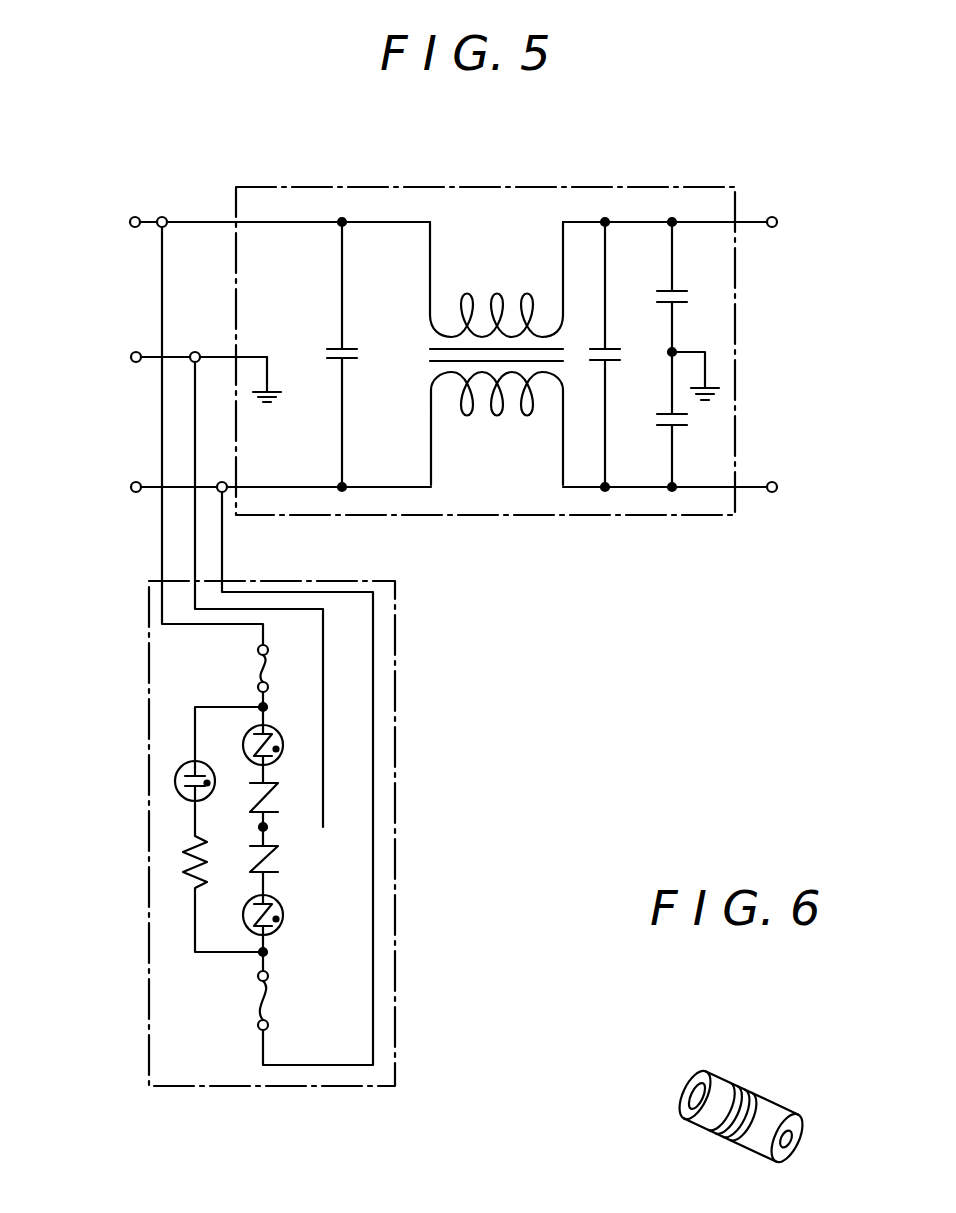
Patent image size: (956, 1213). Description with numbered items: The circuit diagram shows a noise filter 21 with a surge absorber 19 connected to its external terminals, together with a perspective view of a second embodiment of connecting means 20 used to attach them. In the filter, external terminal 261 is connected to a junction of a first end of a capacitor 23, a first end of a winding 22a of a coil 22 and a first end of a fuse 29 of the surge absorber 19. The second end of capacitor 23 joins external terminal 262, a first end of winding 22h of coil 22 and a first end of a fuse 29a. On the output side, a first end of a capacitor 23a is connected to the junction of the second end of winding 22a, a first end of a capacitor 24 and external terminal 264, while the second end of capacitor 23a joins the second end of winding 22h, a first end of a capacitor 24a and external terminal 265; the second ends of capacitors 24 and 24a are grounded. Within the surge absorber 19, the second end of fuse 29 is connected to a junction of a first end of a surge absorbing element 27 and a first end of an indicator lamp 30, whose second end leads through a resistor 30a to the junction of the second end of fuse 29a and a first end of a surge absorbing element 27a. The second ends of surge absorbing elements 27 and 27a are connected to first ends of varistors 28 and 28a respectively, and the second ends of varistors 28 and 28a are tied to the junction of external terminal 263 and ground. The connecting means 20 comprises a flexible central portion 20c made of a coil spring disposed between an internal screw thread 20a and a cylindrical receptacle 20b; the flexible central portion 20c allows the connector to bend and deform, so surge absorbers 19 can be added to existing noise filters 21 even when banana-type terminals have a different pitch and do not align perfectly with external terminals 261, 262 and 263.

In FIG. 5, the surge absorber 19 is at (309, 1088).
In FIG. 6, the connecting means 20 is at (764, 1099).
In FIG. 6, the internal screw thread 20a is at (692, 1083).
In FIG. 6, the cylindrical receptacle 20b is at (789, 1143).
In FIG. 6, the flexible central portion 20c is at (722, 1132).
In FIG. 5, the noise filter 21 is at (700, 186).
In FIG. 5, the coil 22 is at (485, 309).
In FIG. 5, the winding 22a is at (461, 283).
In FIG. 5, the winding 22h is at (497, 427).
In FIG. 5, the capacitor 23 is at (328, 345).
In FIG. 5, the capacitor 23a is at (597, 343).
In FIG. 5, the capacitor 24 is at (690, 294).
In FIG. 5, the capacitor 24a is at (695, 420).
In FIG. 5, the external terminal 261 is at (128, 222).
In FIG. 5, the external terminal 262 is at (129, 487).
In FIG. 5, the external terminal 263 is at (129, 357).
In FIG. 5, the external terminal 264 is at (778, 223).
In FIG. 5, the external terminal 265 is at (778, 487).
In FIG. 5, the surge absorbing element 27 is at (284, 745).
In FIG. 5, the surge absorbing element 27a is at (284, 918).
In FIG. 5, the varistor 28 is at (281, 800).
In FIG. 5, the varistor 28a is at (281, 862).
In FIG. 5, the fuse 29 is at (253, 672).
In FIG. 5, the fuse 29a is at (257, 1000).
In FIG. 5, the indicator lamp 30 is at (175, 784).
In FIG. 5, the resistor 30a is at (188, 880).